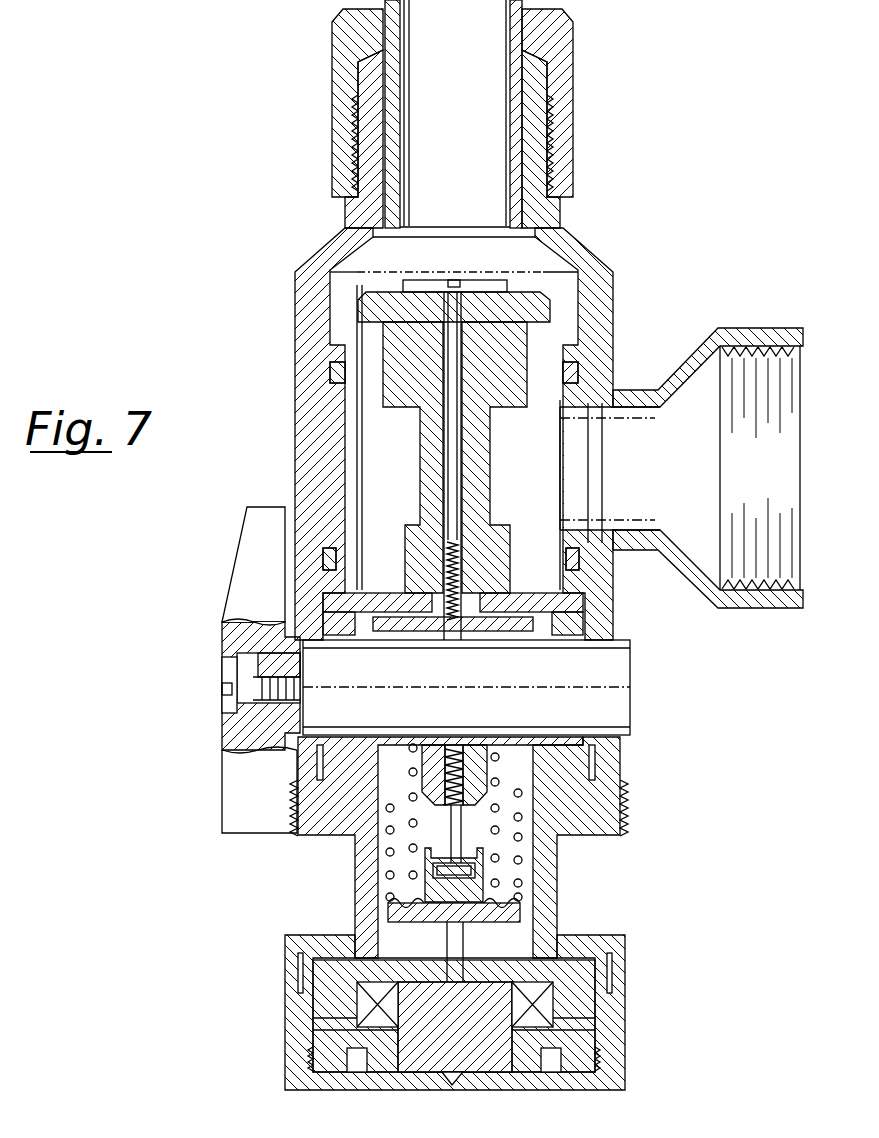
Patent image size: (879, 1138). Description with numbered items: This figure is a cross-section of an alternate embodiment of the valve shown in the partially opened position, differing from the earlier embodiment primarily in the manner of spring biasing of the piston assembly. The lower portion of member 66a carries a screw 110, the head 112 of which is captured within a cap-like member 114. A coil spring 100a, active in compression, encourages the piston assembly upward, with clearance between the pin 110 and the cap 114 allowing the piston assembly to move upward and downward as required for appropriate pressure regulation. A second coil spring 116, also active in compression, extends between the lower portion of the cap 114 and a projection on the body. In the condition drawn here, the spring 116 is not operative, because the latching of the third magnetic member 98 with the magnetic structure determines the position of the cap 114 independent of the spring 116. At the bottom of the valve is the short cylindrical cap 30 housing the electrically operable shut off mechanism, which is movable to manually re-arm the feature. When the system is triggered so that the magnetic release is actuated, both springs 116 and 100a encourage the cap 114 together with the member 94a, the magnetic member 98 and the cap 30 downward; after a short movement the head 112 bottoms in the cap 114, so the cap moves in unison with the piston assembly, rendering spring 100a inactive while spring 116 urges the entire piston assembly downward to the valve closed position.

The cap 30 is at (292, 1040).
The member 66a is at (470, 773).
The member 94a is at (478, 922).
The third magnetic member 98 is at (415, 1070).
The coil spring 100a is at (493, 830).
The screw 110 is at (453, 817).
The head 112 is at (440, 870).
The cap-like member 114 is at (490, 862).
The second coil spring 116 is at (390, 852).